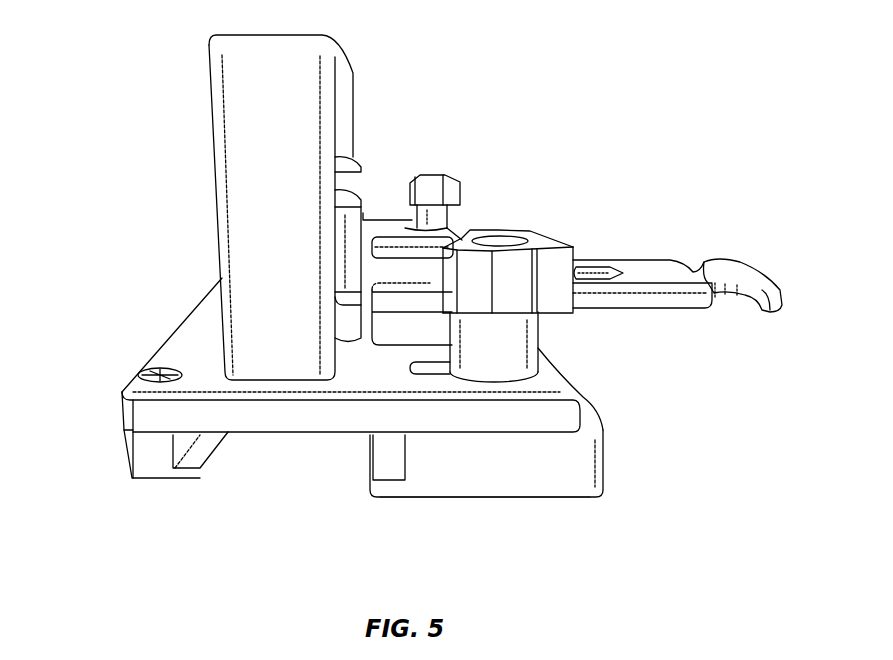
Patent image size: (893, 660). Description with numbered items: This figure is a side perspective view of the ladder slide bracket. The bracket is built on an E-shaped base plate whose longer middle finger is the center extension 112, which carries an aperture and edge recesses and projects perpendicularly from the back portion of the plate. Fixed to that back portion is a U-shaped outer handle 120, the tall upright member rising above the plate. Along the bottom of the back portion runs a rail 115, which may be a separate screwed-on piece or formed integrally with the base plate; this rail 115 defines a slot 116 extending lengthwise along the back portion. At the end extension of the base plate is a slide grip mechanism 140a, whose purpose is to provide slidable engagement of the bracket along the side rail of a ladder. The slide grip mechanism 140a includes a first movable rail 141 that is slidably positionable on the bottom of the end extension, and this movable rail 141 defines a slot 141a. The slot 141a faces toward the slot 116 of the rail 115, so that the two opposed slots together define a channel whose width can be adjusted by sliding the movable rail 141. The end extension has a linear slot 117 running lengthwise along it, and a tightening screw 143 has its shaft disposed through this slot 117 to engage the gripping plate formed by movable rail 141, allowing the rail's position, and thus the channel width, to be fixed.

The outer handle 120 is at (248, 72).
The tightening screw 143 is at (537, 228).
The linear slot 117 is at (425, 376).
The center extension 112 is at (677, 285).
The rail 115 is at (122, 440).
The slot 116 is at (182, 446).
The first movable rail 141 is at (607, 459).
The slot 141a is at (403, 447).
The slide grip mechanism 140a is at (565, 517).